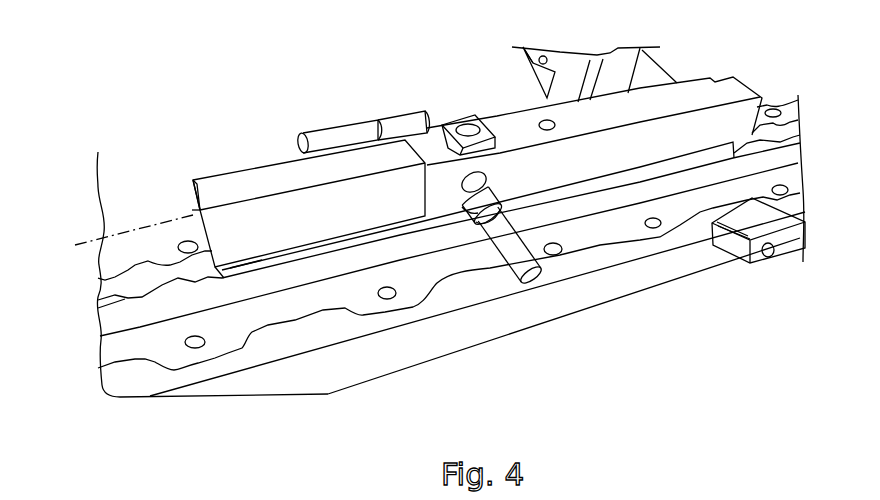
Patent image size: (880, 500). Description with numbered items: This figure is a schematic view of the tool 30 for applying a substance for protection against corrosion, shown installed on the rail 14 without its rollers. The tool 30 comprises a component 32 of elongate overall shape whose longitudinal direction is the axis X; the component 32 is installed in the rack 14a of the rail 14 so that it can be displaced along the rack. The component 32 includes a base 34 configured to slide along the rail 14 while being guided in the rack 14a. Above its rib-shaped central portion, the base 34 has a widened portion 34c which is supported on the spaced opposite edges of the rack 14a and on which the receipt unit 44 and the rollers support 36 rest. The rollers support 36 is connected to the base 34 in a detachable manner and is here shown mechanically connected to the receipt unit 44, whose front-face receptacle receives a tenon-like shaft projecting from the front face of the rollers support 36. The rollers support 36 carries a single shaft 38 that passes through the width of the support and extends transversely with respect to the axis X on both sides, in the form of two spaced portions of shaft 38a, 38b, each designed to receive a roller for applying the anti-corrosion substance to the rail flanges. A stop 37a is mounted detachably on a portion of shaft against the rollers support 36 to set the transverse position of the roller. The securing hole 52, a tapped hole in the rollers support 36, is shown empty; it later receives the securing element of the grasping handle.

The rail 14 is at (94, 356).
The rack 14a is at (117, 291).
The tool 30 is at (668, 314).
The component 32 is at (181, 180).
The base 34 is at (300, 252).
The widened portion 34c is at (247, 268).
The rollers support 36 is at (744, 110).
The stop 37a is at (466, 207).
The shaft 38 is at (535, 292).
The portion of shaft 38a is at (513, 257).
The portion of shaft 38b is at (410, 123).
The receipt unit 44 is at (258, 190).
The securing hole 52 is at (548, 122).
The axis X is at (90, 241).